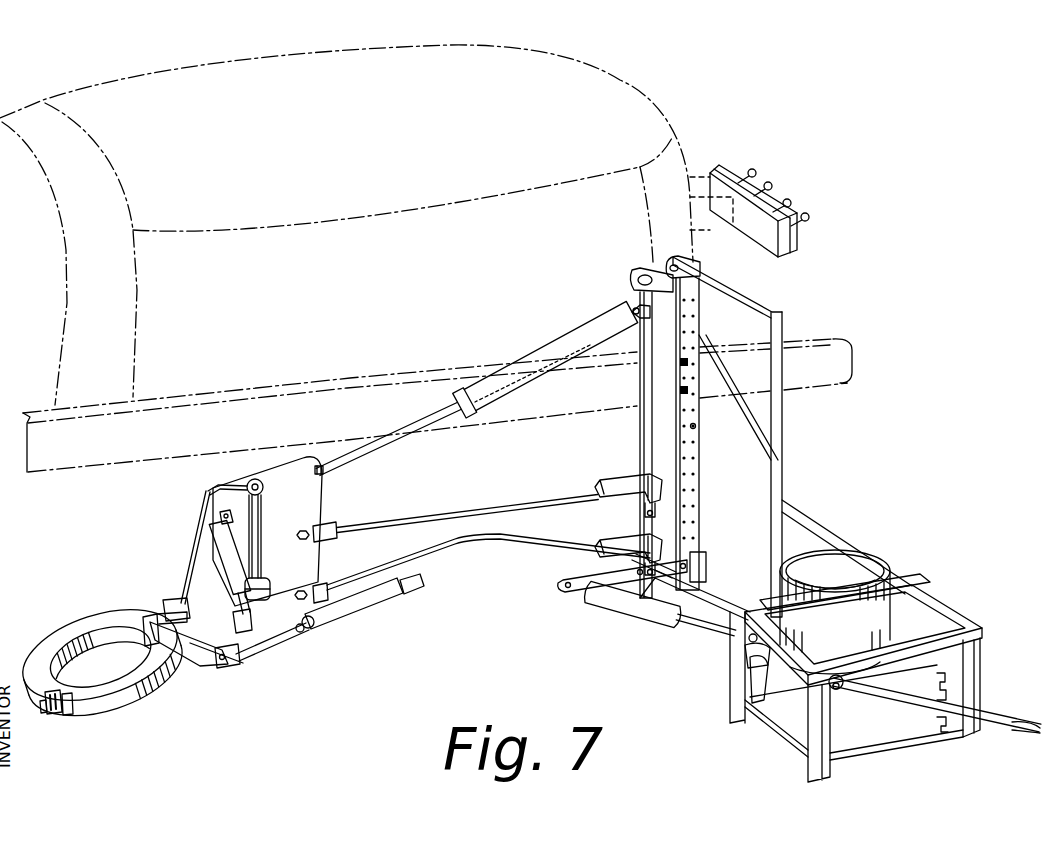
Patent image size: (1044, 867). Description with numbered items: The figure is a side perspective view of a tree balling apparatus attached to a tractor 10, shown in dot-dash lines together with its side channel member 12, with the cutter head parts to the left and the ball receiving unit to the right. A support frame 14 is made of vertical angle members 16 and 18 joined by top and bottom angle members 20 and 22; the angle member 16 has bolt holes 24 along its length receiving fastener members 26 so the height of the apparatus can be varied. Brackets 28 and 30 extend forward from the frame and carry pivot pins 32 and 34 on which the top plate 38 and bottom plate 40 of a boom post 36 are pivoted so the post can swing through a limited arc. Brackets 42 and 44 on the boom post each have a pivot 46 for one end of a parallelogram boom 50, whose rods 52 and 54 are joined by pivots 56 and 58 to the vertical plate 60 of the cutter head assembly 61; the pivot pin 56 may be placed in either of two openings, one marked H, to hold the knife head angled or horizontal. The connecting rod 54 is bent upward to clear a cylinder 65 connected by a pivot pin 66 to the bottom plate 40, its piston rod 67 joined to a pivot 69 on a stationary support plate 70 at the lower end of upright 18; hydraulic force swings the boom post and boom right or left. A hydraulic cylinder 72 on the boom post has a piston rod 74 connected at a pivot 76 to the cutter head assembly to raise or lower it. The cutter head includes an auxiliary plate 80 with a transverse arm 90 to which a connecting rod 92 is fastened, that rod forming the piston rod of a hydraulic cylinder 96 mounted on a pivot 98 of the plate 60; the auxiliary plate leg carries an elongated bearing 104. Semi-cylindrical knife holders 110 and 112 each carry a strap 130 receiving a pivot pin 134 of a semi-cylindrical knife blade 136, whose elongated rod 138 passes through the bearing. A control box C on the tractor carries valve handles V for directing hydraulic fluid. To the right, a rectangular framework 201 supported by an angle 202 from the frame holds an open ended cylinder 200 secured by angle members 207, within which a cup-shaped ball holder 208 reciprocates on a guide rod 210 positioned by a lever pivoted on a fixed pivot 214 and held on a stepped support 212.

The tractor 10 is at (633, 114).
The channel member 12 is at (833, 338).
The support frame 14 is at (797, 472).
The vertical angle member 16 is at (700, 465).
The vertical angle member 18 is at (790, 415).
The top angle member 20 is at (768, 304).
The bottom angle member 22 is at (726, 600).
The bolt holes 24 is at (704, 428).
The fastener members 26 is at (680, 390).
The bracket 28 is at (705, 263).
The bracket 30 is at (694, 574).
The pivot pin 32 is at (692, 554).
The pivot pin 34 is at (665, 262).
The boom post 36 is at (640, 432).
The top plate 38 is at (632, 278).
The bottom plate 40 is at (660, 574).
The bracket 42 is at (616, 479).
The bracket 44 is at (628, 534).
The pivot 46 is at (653, 514).
The parallelogram boom 50 is at (492, 494).
The rod 52 is at (432, 512).
The connecting rod 54 is at (433, 560).
The pivot pin 56 is at (336, 526).
The pivot 58 is at (330, 586).
The vertical plate 60 is at (283, 455).
The cutter head assembly 61 is at (208, 562).
The cylinder 65 is at (642, 610).
The pivot pin 66 is at (562, 584).
The piston rod 67 is at (700, 622).
The pivot 69 is at (748, 650).
The stationary support plate 70 is at (742, 660).
The hydraulic cylinder 72 is at (512, 385).
The piston rod 74 is at (630, 306).
The pivot 76 is at (318, 465).
The auxiliary plate 80 is at (248, 528).
The transverse arm 90 is at (200, 648).
The connecting rod 92 is at (305, 632).
The hydraulic cylinder 96 is at (360, 618).
The pivot 98 is at (428, 584).
The elongated bearing 104 is at (235, 664).
The knife holder 110 is at (120, 712).
The knife holder 112 is at (92, 613).
The strap 130 is at (50, 716).
The pivot pin 134 is at (58, 690).
The knife blade 136 is at (103, 744).
The elongated rod 138 is at (262, 634).
The open ended cylinder 200 is at (845, 558).
The framework 201 is at (952, 622).
The angle 202 is at (782, 548).
The angle members 207 is at (906, 601).
The cup-shaped ball holder 208 is at (855, 578).
The guide rod 210 is at (868, 698).
The stepped support 212 is at (946, 735).
The fixed pivot 214 is at (776, 712).
The control box C is at (785, 238).
The valve handles V is at (803, 213).
The opening H is at (287, 535).